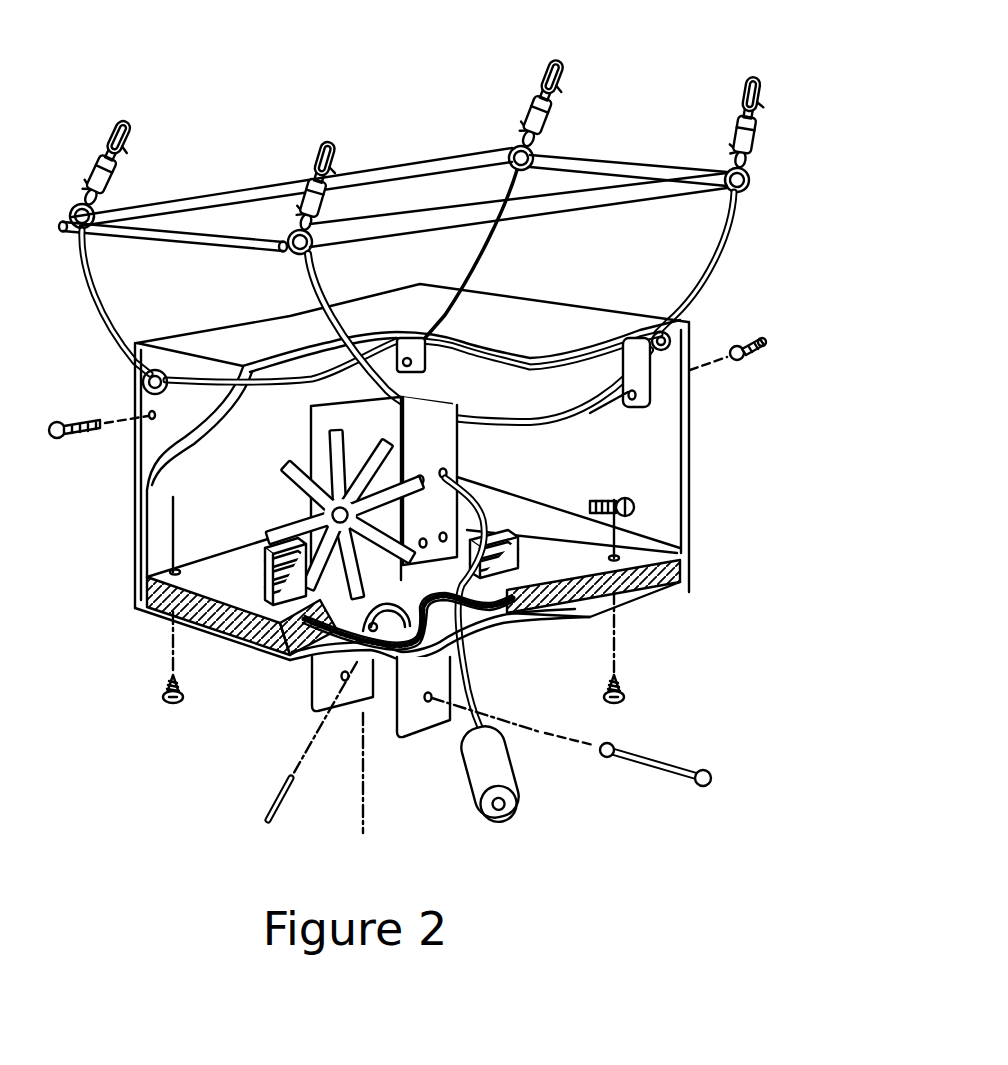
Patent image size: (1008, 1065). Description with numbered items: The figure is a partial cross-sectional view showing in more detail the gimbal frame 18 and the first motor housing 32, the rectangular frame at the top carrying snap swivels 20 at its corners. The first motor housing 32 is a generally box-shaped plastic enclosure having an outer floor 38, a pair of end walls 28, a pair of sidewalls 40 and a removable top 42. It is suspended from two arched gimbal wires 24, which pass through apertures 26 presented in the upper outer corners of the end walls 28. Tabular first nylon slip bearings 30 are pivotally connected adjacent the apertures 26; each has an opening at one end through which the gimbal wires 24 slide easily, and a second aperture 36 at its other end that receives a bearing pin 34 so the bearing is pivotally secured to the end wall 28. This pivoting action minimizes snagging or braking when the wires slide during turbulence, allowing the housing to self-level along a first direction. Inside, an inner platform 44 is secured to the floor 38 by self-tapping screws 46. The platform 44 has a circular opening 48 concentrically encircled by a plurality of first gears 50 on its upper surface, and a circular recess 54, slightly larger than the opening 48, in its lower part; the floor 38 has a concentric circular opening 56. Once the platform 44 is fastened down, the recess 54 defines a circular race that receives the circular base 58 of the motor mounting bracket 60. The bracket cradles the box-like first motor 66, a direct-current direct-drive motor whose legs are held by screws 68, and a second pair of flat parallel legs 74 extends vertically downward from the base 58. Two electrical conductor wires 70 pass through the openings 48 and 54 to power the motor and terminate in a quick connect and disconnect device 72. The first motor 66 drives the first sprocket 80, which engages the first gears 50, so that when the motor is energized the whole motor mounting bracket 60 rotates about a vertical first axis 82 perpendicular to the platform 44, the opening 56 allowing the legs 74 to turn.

The gimbal frame 18 is at (201, 176).
The snap swivel 20 is at (345, 128).
The arched shaped gimbals 24 is at (110, 312).
The apertures 26 is at (143, 380).
The end walls 28 is at (156, 414).
The first nylon slip bearings 30 is at (423, 362).
The first motor housing 32 is at (549, 264).
The bearing pin 34 is at (75, 432).
The aperture 36 is at (153, 420).
The outer floor 38 is at (648, 594).
The sidewalls 40 is at (232, 461).
The removable top 42 is at (366, 300).
The inner platform 44 is at (144, 617).
The self-tapping screws 46 is at (185, 700).
The circular opening 48 is at (460, 474).
The first gears 50 is at (508, 570).
The circular recess 54 is at (478, 632).
The circular opening 56 is at (467, 665).
The circular base 58 is at (310, 658).
The motor mounting bracket 60 is at (452, 452).
The first motor 66 is at (312, 420).
The screws 68 is at (630, 503).
The electrical conductor wires 70 is at (447, 482).
The quick connect and disconnect device 72 is at (505, 768).
The legs 74 is at (408, 718).
The first sprocket 80 is at (295, 483).
The first axis 82 is at (364, 798).